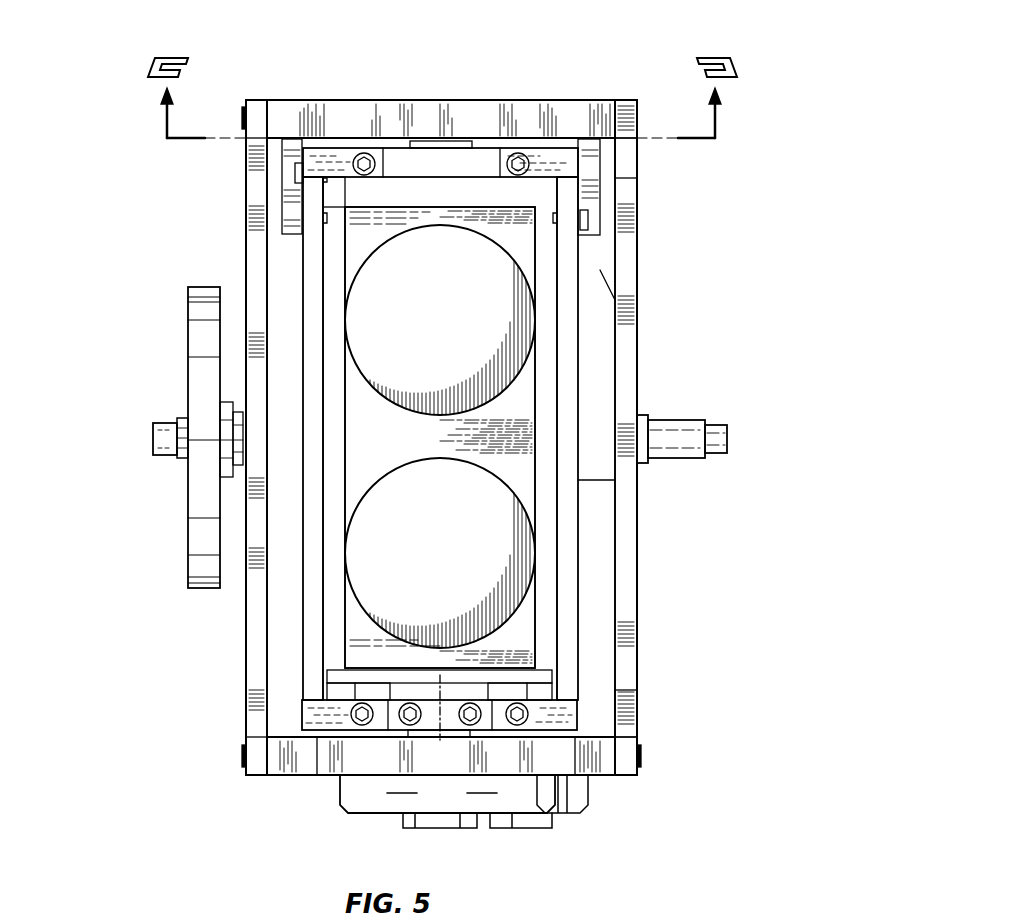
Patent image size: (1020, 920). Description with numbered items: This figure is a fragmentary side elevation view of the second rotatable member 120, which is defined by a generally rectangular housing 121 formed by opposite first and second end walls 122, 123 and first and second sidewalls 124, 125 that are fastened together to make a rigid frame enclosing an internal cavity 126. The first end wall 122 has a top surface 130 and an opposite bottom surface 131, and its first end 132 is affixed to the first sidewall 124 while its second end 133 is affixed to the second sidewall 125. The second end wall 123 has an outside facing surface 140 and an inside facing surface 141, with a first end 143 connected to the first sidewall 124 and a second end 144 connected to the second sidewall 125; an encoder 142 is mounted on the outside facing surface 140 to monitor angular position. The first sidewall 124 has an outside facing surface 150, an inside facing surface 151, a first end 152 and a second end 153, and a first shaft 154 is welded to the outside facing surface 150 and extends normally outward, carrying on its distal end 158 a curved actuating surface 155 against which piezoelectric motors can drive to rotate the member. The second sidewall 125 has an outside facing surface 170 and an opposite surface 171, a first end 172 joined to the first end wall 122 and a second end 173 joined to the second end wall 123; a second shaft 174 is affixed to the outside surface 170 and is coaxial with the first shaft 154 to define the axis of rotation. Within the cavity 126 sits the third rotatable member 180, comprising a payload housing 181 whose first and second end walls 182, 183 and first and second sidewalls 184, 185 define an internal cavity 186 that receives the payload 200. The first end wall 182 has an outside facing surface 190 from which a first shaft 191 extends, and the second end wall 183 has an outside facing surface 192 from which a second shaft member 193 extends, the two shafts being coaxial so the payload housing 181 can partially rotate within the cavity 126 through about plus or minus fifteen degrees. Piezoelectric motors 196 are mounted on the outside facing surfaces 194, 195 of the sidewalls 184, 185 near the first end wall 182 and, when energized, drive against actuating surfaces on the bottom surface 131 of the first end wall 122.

The second rotatable member 120 is at (746, 216).
The housing 121 is at (250, 222).
The first end wall 122 is at (402, 99).
The second end wall 123 is at (290, 782).
The first sidewall 124 is at (258, 388).
The second sidewall 125 is at (628, 311).
The internal cavity 126 is at (596, 514).
The top surface 130 is at (358, 100).
The bottom surface 131 is at (375, 146).
The first end 132 is at (275, 107).
The second end 133 is at (605, 110).
The outside facing surface 140 is at (508, 793).
The inside facing surface 141 is at (593, 717).
The encoder 142 is at (358, 795).
The first end 143 is at (275, 751).
The second end 144 is at (606, 758).
The outside facing surface 150 is at (248, 631).
The inside facing surface 151 is at (272, 665).
The first end 152 is at (265, 146).
The second end 153 is at (258, 770).
The first shaft 154 is at (150, 458).
The curved actuating surface 155 is at (205, 332).
The distal end 158 is at (180, 419).
The outside facing surface 170 is at (640, 258).
The outside facing surface 171 is at (618, 294).
The first end 172 is at (632, 160).
The second end 173 is at (617, 712).
The second shaft 174 is at (684, 432).
The third rotatable member 180 is at (585, 389).
The payload housing 181 is at (315, 482).
The first end wall 182 is at (540, 158).
The second end wall 183 is at (540, 712).
The first sidewall 184 is at (322, 508).
The second sidewall 185 is at (568, 332).
The internal cavity 186 is at (350, 195).
The outside facing surface 190 is at (483, 105).
The first shaft 191 is at (438, 141).
The outside facing surface 192 is at (320, 703).
The second shaft member 193 is at (440, 676).
The outside facing surface 194 is at (300, 268).
The outside facing surface 195 is at (583, 250).
The piezoelectric motors 196 is at (288, 183).
The payload 200 is at (396, 434).